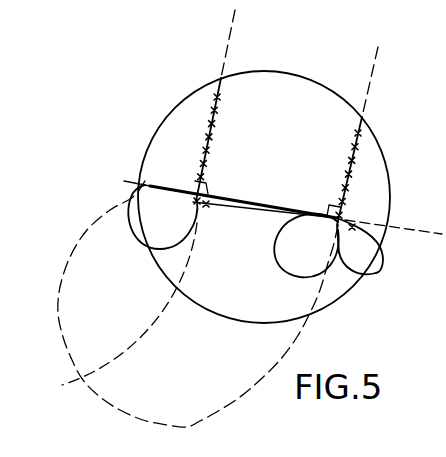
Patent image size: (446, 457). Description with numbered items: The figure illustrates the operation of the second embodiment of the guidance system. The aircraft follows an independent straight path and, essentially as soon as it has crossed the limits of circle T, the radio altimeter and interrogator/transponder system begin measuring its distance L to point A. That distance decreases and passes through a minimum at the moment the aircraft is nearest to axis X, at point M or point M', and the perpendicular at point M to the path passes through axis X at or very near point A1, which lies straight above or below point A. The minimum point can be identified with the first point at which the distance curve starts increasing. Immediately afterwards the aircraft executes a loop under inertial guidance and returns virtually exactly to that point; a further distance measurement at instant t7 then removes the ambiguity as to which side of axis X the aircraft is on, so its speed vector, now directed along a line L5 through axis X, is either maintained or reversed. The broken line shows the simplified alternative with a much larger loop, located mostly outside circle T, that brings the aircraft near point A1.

The circle T is at (306, 79).
The line L5 is at (320, 206).
The point M is at (185, 176).
The point M' is at (354, 203).
The point A is at (268, 203).
The point A1 is at (265, 197).
The instant t7 is at (226, 205).